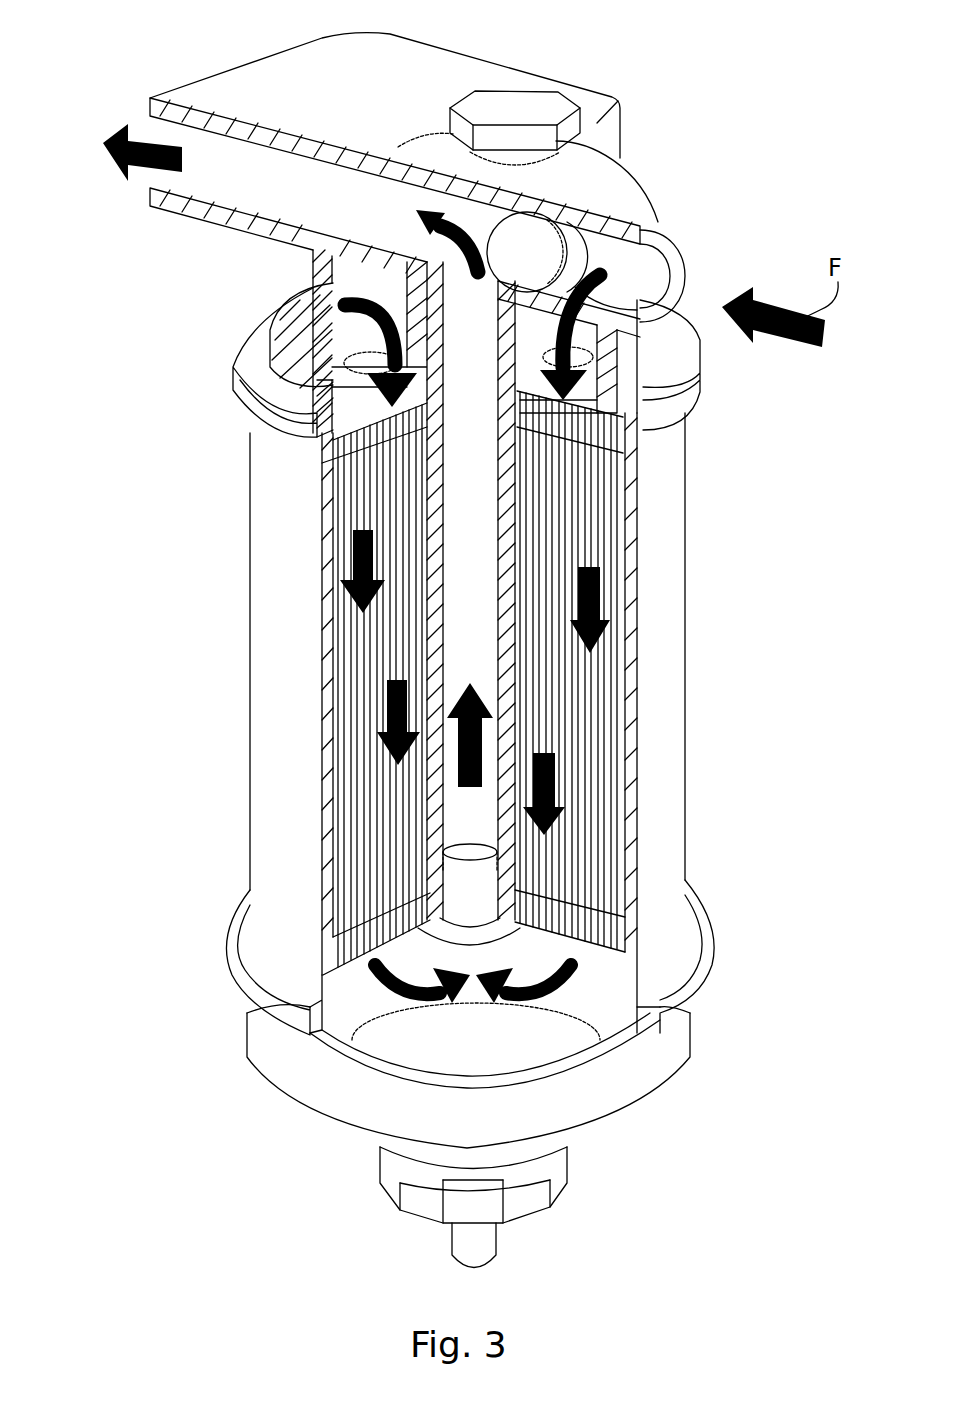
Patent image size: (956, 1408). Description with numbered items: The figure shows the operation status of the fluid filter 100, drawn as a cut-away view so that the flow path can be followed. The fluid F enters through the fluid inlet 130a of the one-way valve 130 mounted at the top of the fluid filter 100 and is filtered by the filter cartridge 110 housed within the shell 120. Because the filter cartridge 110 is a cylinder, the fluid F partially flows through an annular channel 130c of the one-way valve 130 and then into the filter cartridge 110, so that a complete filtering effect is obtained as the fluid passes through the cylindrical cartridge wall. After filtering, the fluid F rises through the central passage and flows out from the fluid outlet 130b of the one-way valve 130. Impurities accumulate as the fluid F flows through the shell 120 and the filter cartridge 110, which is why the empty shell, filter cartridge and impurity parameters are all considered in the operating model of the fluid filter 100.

The fluid filter 100 is at (128, 24).
The filter cartridge 110 is at (345, 500).
The shell 120 is at (673, 693).
The one-way valve 130 is at (627, 190).
The fluid inlet 130a is at (640, 268).
The fluid outlet 130b is at (188, 132).
The annular channel 130c is at (333, 313).